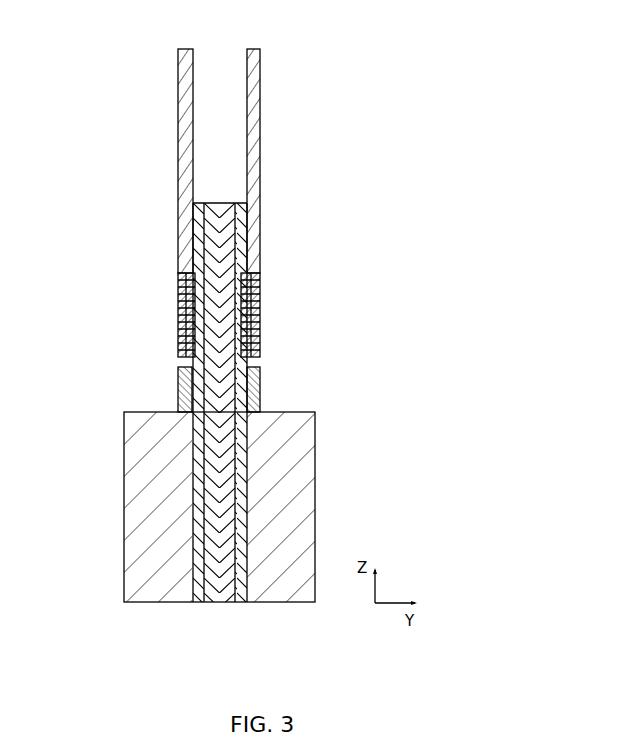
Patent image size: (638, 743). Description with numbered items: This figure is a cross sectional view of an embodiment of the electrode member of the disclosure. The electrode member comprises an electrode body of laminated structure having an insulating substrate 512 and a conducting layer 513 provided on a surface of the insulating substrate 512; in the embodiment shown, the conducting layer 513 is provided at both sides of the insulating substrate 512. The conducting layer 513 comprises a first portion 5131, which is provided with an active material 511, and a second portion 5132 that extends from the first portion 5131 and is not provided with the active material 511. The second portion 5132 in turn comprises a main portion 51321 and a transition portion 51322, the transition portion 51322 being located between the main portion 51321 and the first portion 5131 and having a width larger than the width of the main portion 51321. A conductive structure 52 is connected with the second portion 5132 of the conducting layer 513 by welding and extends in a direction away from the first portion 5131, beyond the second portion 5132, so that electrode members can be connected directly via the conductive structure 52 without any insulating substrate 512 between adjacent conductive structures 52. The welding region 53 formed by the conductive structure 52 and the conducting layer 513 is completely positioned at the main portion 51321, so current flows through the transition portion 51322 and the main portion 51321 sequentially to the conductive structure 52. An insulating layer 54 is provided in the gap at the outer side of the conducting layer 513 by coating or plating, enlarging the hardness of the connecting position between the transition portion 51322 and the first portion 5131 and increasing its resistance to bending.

The conductive structure 52 is at (180, 125).
The welding region 53 is at (170, 300).
The insulating layer 54 is at (180, 388).
The active material 511 is at (145, 532).
The insulating substrate 512 is at (215, 580).
The conducting layer 513 is at (262, 534).
The first portion 5131 is at (253, 510).
The second portion 5132 is at (347, 402).
The main portion 51321 is at (258, 235).
The transition portion 51322 is at (292, 357).